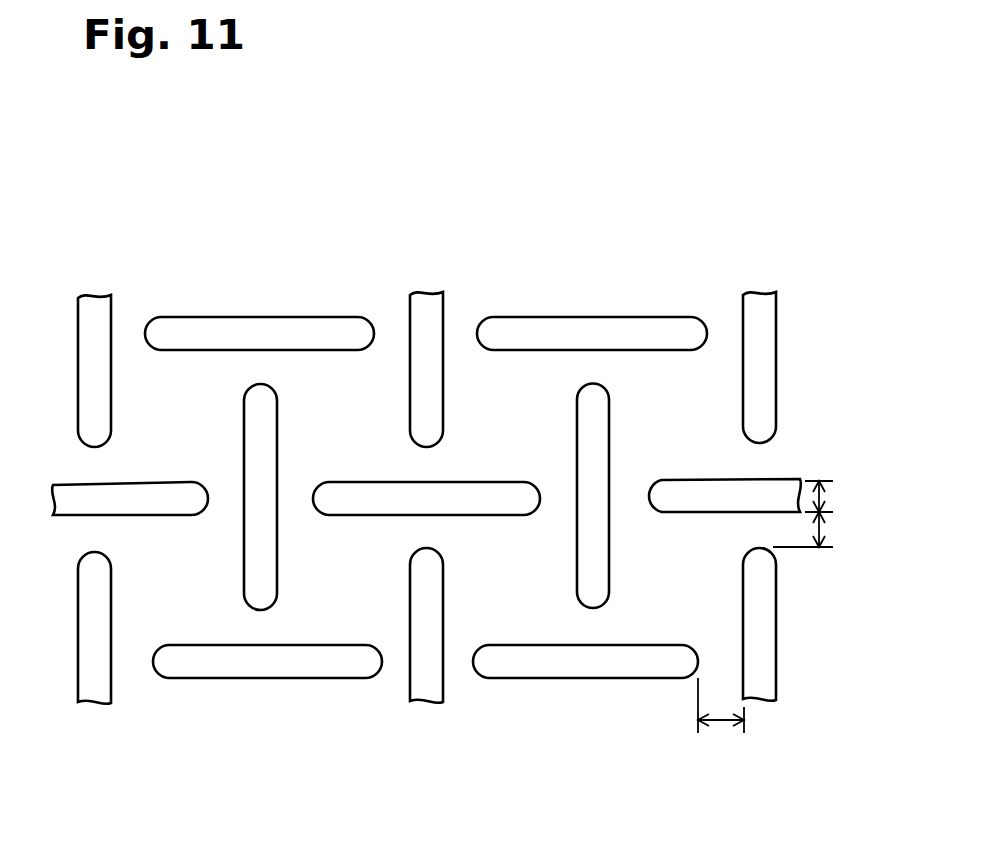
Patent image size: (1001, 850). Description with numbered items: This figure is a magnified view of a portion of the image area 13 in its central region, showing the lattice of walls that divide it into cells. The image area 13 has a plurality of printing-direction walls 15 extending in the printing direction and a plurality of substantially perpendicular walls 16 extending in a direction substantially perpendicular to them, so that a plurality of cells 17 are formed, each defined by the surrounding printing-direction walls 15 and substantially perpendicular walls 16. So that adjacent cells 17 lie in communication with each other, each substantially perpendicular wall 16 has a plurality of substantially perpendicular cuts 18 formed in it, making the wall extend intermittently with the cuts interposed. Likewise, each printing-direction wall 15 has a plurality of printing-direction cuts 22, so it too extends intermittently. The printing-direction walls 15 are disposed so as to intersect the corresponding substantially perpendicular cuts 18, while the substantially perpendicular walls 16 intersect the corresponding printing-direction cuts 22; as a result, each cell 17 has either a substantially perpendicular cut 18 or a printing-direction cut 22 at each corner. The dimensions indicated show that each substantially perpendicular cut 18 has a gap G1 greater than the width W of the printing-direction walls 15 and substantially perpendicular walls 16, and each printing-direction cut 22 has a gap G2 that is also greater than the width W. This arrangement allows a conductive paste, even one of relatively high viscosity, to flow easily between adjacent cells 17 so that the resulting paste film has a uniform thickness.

The image area 13 is at (75, 239).
The printing-direction wall 15 is at (577, 323).
The substantially perpendicular wall 16 is at (585, 548).
The cell 17 is at (340, 417).
The substantially perpendicular cut 18 is at (595, 368).
The printing-direction cut 22 is at (220, 507).
The width W is at (822, 503).
The gap G1 is at (822, 530).
The gap G2 is at (717, 723).